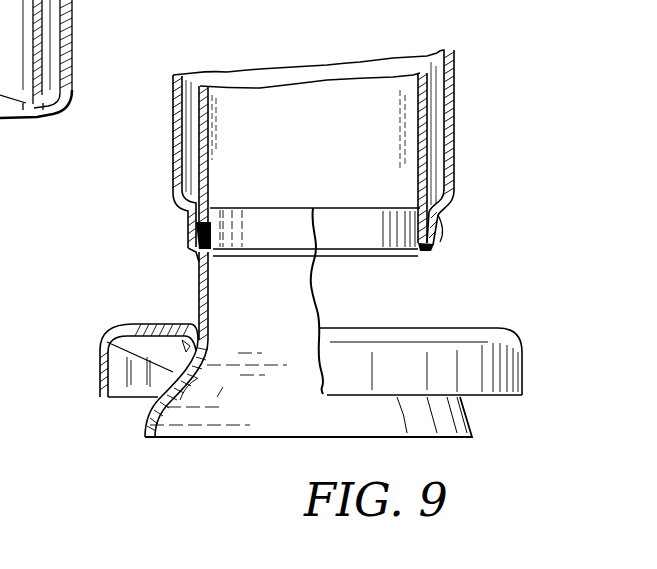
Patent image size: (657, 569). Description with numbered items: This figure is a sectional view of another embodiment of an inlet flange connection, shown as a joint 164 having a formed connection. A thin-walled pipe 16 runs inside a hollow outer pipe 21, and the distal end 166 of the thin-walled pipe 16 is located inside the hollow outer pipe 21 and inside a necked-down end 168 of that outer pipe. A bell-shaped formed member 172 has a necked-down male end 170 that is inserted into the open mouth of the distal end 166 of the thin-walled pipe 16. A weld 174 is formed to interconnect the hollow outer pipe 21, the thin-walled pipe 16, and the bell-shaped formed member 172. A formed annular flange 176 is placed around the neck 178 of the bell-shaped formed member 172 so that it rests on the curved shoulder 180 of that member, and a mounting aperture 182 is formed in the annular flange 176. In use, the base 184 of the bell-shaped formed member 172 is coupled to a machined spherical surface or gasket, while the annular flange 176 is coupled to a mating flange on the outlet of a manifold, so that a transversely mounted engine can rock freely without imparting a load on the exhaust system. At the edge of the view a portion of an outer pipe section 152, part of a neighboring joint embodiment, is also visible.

The outer pipe section 152 is at (73, 42).
The thin-walled pipe 16 is at (362, 78).
The hollow outer pipe 21 is at (455, 82).
The joint 164 is at (460, 174).
The distal end 166 is at (420, 243).
The necked-down male end 170 is at (214, 229).
The weld 174 is at (200, 246).
The necked-down end 168 is at (439, 214).
The formed annular flange 176 is at (510, 327).
The bell-shaped formed member 172 is at (425, 312).
The mounting aperture 182 is at (147, 322).
The neck 178 is at (200, 292).
The curved shoulder 180 is at (167, 368).
The base 184 is at (183, 440).